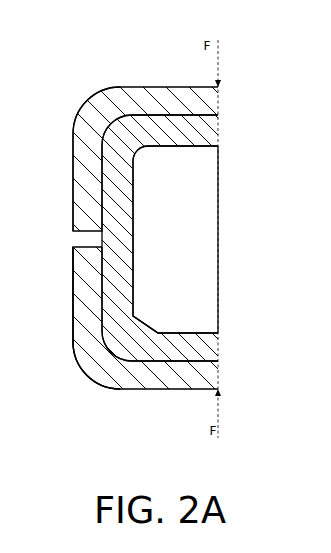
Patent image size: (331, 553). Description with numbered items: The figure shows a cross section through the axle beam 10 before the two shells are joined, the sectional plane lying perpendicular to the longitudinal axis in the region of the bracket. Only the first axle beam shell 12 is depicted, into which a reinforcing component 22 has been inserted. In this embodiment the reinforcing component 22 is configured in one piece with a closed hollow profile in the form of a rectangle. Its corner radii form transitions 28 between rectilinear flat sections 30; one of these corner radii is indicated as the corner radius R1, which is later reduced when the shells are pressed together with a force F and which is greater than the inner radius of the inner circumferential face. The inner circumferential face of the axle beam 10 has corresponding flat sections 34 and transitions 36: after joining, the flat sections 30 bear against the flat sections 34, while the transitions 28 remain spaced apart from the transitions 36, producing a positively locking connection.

The axle beam 10 is at (240, 20).
The first axle beam shell 12 is at (85, 360).
The reinforcing component 22 is at (216, 152).
The transitions 28 is at (146, 151).
The flat sections 30 is at (186, 118).
The flat sections of the inner circumferential face 34 is at (90, 118).
The transitions of the inner circumferential face 36 is at (110, 93).
The corner radius R1 is at (117, 340).